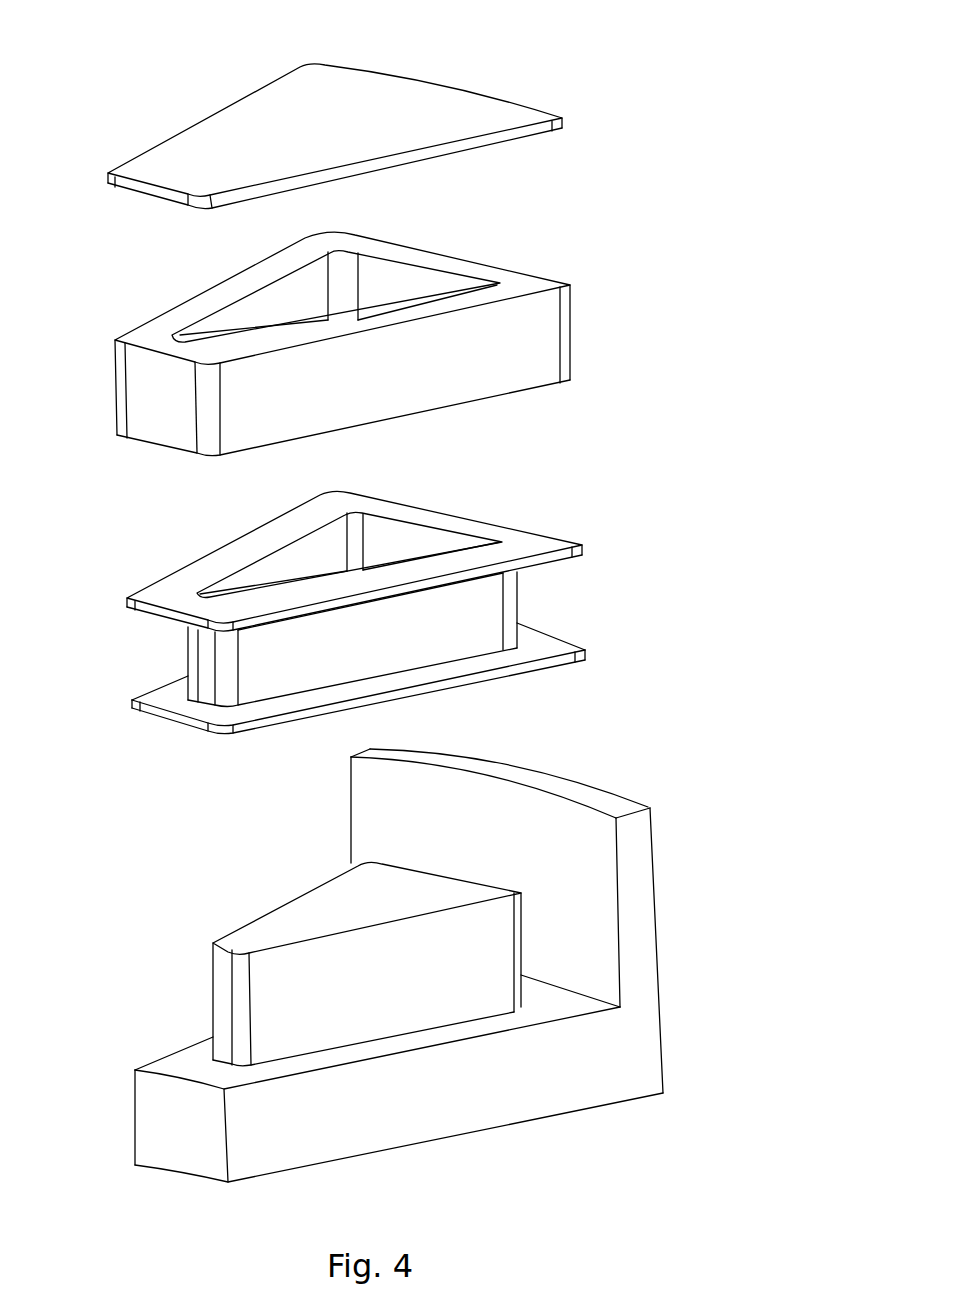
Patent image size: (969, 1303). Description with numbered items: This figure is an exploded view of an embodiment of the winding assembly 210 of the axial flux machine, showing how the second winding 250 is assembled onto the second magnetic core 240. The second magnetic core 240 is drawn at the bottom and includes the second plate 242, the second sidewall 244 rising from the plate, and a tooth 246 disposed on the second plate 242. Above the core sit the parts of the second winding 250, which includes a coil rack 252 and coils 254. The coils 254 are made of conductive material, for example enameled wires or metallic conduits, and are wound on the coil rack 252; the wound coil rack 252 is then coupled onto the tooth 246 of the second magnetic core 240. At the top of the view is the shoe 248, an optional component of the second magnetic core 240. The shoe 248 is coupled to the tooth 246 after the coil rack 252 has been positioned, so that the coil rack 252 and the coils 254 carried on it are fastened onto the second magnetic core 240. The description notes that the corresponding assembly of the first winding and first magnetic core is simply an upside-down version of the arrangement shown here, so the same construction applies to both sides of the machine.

The carrier assembly 210 is at (60, 23).
The second magnetic core 240 is at (740, 23).
The second plate 242 is at (582, 1052).
The second sidewall 244 is at (640, 932).
The tooth 246 is at (488, 942).
The shoe 248 is at (495, 113).
The second winding 250 is at (715, 380).
The coil rack 252 is at (477, 612).
The coils 254 is at (528, 337).